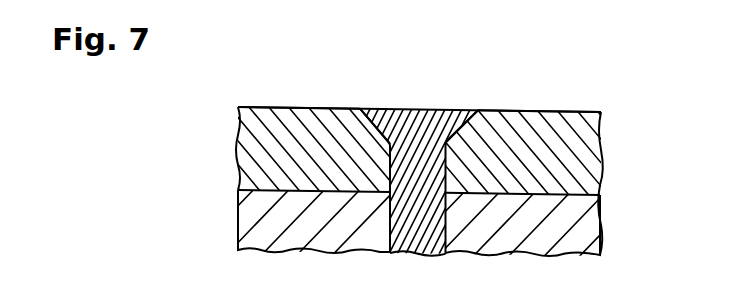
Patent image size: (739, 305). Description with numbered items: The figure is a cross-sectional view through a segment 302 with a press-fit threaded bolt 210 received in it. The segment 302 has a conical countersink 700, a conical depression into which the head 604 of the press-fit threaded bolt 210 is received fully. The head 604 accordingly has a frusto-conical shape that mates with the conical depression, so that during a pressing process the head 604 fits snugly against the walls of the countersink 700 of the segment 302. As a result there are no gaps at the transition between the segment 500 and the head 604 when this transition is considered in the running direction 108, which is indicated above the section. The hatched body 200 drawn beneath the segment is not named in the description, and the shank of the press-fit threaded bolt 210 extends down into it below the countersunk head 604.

The running direction 108 is at (333, 85).
The head 604 is at (398, 109).
The conical countersink 700 is at (459, 111).
The segment 500 is at (538, 110).
The segment 302 is at (585, 145).
The substrate 200 is at (585, 220).
The press-fit threaded bolt 210 is at (425, 250).